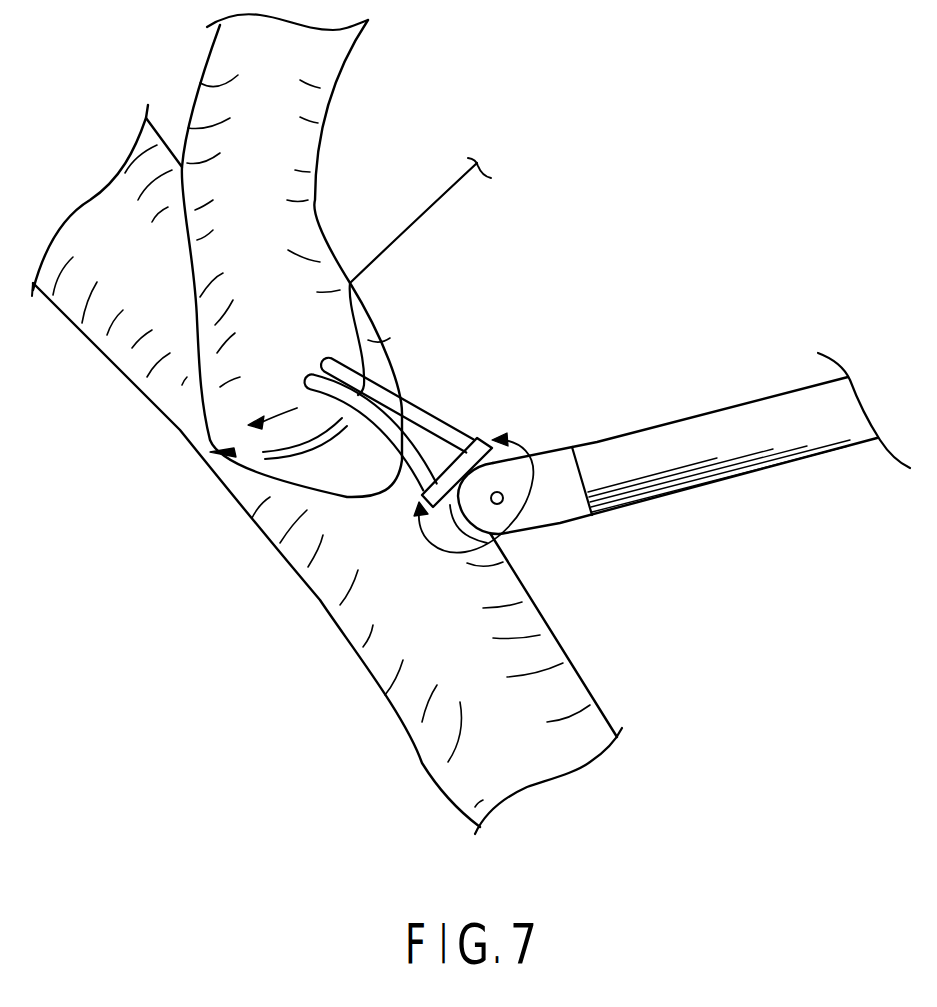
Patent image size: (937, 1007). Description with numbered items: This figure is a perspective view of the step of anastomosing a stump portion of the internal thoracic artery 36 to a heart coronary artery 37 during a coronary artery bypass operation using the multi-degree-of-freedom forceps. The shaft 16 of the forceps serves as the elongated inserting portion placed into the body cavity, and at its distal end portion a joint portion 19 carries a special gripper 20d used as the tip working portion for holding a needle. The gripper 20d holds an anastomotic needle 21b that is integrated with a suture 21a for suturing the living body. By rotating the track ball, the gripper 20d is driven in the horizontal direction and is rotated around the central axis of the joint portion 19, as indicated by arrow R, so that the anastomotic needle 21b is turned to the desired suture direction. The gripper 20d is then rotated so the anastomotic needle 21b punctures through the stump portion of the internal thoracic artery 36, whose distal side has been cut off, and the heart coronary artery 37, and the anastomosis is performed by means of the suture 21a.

The internal thoracic artery 36 is at (335, 57).
The heart coronary artery 37 is at (422, 763).
The suture 21a is at (442, 193).
The anastomotic needle 21b is at (372, 362).
The gripper 20d is at (410, 403).
The joint portion 19 is at (497, 533).
The arrow indicating rotation R is at (473, 509).
The shaft 16 is at (705, 477).